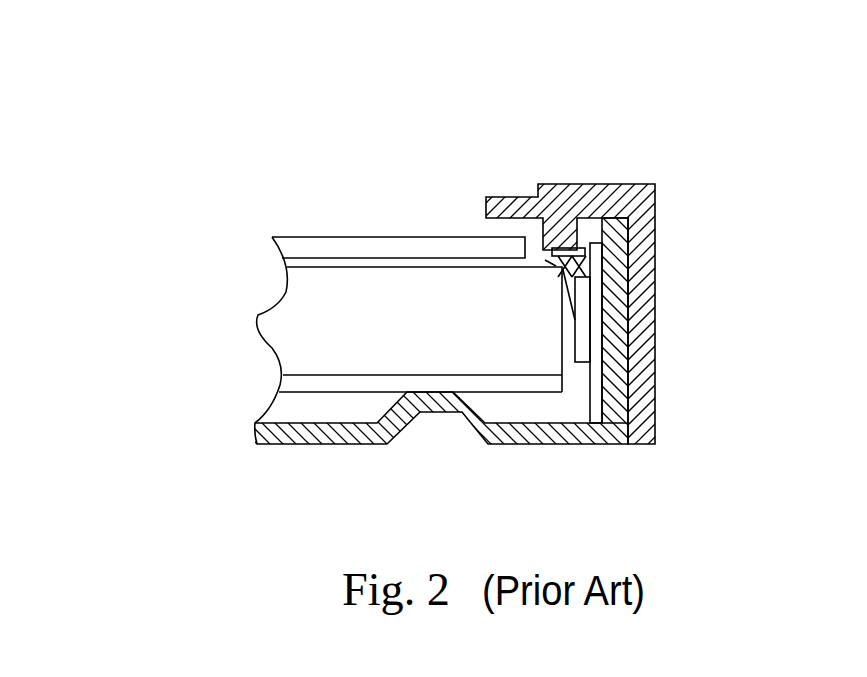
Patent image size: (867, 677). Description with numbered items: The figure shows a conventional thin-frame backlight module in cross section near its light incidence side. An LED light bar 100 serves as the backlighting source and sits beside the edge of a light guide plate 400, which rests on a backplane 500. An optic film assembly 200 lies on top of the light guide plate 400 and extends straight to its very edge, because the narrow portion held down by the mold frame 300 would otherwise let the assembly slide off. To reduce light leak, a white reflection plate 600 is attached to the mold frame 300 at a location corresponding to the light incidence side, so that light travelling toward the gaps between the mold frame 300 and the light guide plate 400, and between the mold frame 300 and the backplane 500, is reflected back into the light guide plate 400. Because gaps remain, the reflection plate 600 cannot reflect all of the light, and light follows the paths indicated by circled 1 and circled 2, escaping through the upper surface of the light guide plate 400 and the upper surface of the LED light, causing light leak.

The LED light bar 100 is at (600, 392).
The optic film assembly 200 is at (377, 248).
The mold frame 300 is at (622, 202).
The light guide plate 400 is at (297, 325).
The backplane 500 is at (365, 423).
The white reflection plate 600 is at (552, 248).
The light path 1 is at (567, 273).
The light path 2 is at (567, 297).